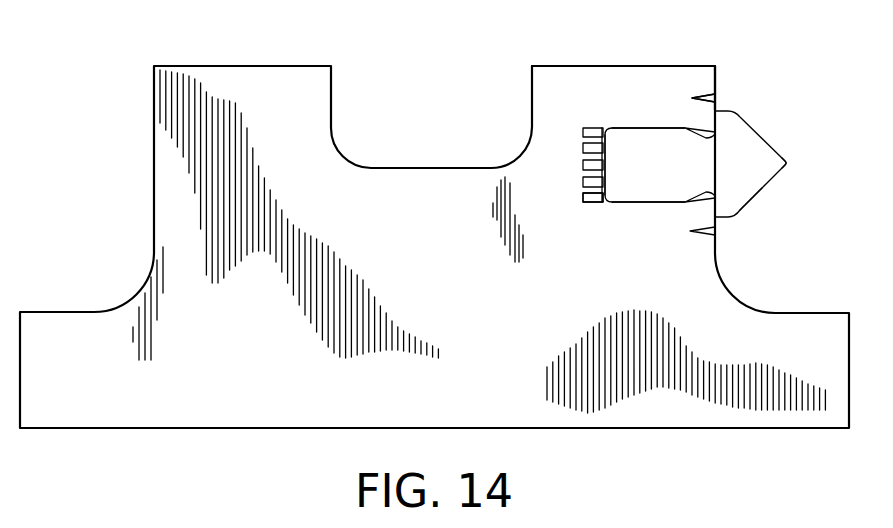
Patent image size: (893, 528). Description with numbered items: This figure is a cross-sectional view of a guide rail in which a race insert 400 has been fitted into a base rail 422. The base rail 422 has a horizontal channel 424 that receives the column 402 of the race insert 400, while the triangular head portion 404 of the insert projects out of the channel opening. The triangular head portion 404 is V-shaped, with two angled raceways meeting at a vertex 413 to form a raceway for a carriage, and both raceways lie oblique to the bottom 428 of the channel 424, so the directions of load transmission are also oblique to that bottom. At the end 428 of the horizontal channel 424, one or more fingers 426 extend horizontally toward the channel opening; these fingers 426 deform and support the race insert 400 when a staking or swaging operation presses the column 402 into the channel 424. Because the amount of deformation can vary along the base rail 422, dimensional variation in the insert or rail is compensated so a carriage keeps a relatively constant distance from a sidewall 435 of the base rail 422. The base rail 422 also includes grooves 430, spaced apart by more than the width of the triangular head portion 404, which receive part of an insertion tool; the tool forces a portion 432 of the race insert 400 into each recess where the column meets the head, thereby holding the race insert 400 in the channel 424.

The race insert 400 is at (757, 128).
The column 402 is at (613, 162).
The triangular head portion 404 is at (748, 207).
The vertex 413 is at (788, 163).
The base rail 422 is at (850, 338).
The horizontal channel 424 is at (647, 163).
The fingers 426 is at (597, 143).
The end of the horizontal channel 428 is at (583, 197).
The grooves 430 is at (708, 97).
The portion of the race insert 432 is at (693, 118).
The sidewall 435 is at (530, 83).